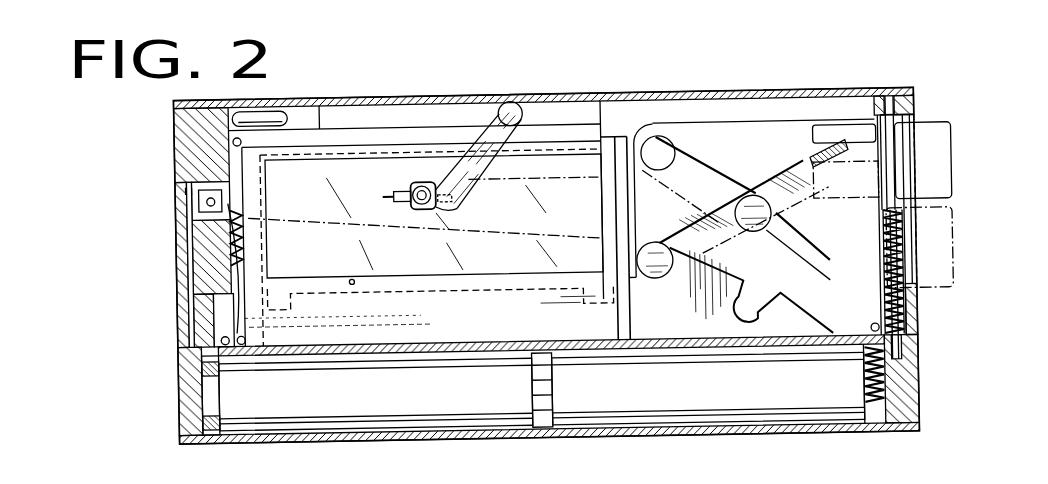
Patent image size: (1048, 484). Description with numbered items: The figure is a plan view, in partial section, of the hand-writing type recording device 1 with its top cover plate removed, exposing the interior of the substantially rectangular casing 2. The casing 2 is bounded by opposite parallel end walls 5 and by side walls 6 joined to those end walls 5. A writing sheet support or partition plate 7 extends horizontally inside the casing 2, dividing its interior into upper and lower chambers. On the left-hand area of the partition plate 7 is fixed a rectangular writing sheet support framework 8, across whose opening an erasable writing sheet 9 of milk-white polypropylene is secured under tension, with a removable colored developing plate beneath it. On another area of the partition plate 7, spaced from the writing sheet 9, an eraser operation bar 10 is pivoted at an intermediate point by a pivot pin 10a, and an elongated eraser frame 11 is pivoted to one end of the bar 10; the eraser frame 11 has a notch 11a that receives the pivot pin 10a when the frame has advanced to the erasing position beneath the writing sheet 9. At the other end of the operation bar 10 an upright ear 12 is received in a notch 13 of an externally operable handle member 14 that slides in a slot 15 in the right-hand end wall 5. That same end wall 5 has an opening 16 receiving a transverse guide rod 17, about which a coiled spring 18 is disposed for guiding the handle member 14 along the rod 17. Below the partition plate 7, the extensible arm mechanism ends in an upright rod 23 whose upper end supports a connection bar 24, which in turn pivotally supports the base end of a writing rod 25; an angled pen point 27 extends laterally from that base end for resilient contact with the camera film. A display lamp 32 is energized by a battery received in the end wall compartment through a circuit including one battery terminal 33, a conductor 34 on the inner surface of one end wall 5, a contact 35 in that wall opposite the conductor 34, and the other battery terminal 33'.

The recording device 1 is at (166, 120).
The casing 2 is at (174, 138).
The end walls 5 is at (195, 381).
The side walls 6 is at (373, 97).
The writing sheet support or partition plate 7 is at (702, 150).
The writing sheet support framework 8 is at (651, 141).
The erasable writing sheet 9 is at (277, 237).
The eraser operation bar 10 is at (800, 270).
The pivot pin 10a is at (658, 244).
The eraser frame 11 is at (372, 169).
The notch 11a is at (759, 324).
The ear 12 is at (830, 153).
The notch 13 is at (850, 148).
The handle member 14 is at (942, 165).
The slot 15 is at (918, 120).
The opening 16 is at (906, 302).
The guide rod 17 is at (909, 354).
The coiled spring 18 is at (904, 230).
The upright rod 23 is at (569, 143).
The connection bar 24 is at (475, 166).
The writing rod 25 is at (442, 180).
The angled pen point 27 is at (405, 180).
The display lamp 32 is at (295, 113).
The battery terminal 33 is at (918, 384).
The battery terminal 33' is at (171, 396).
The conductor 34 is at (176, 316).
The contact 35 is at (211, 197).